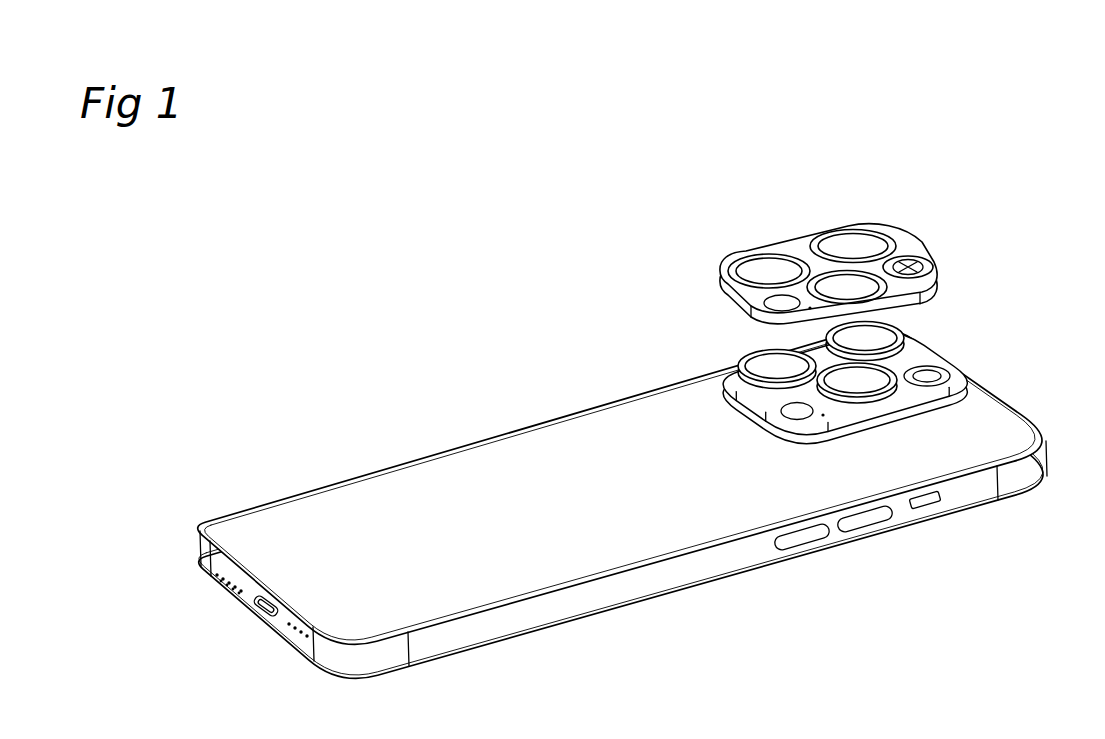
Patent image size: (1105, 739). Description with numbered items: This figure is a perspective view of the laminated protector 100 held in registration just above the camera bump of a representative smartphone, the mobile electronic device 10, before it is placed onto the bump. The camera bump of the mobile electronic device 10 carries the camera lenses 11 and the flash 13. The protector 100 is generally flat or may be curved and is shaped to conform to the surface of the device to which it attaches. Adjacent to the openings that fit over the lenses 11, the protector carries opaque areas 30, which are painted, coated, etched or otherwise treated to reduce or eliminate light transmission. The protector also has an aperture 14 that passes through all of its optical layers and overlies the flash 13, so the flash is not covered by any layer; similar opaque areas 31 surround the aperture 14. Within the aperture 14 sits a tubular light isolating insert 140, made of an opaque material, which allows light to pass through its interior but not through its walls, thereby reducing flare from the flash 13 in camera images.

The mobile electronic device 10 is at (635, 475).
The lenses 11 is at (877, 337).
The flash 13 is at (940, 368).
The aperture 14 is at (750, 304).
The opaque areas 30 is at (813, 230).
The opaque areas 31 is at (930, 262).
The laminated protector 100 is at (790, 243).
The light isolating insert 140 is at (917, 260).